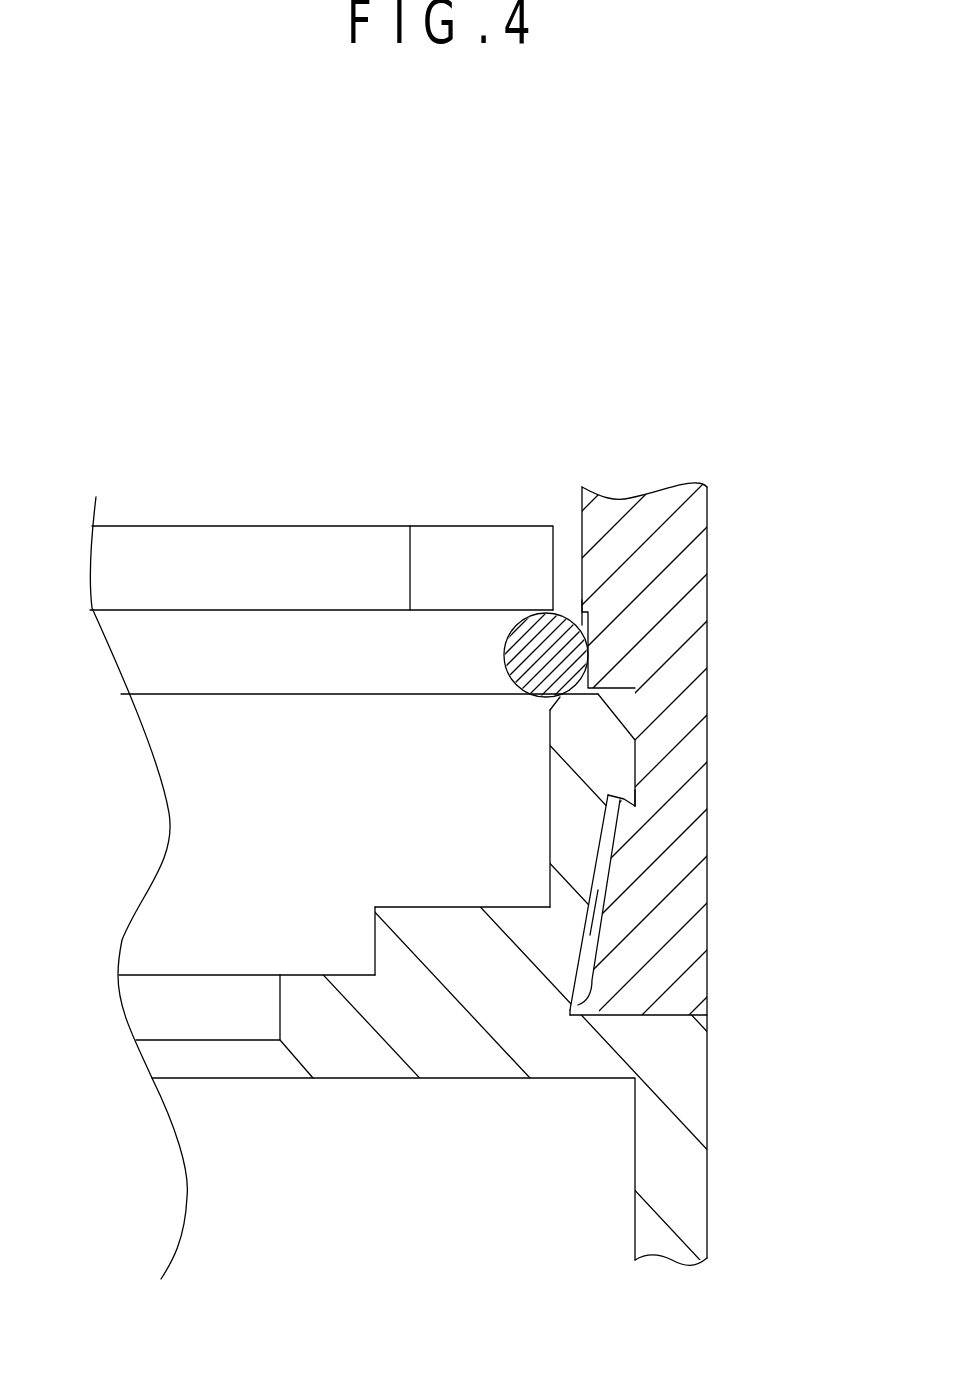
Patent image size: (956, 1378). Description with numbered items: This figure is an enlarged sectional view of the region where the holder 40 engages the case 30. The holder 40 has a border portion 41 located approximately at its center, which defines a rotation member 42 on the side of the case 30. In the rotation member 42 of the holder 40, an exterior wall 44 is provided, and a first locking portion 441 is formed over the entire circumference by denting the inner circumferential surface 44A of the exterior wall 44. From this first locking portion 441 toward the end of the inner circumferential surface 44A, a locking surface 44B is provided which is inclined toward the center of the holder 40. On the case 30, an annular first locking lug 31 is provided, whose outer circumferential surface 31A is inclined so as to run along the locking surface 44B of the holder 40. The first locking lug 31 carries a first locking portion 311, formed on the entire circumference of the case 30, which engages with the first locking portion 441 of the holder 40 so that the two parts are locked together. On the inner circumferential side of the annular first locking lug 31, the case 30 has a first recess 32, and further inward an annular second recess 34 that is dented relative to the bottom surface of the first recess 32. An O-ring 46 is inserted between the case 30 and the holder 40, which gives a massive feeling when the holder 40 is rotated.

The case 30 is at (705, 1152).
The first locking lug 31 is at (605, 830).
The outer circumferential surface 31A is at (578, 917).
The first locking portion 311 is at (628, 800).
The first recess 32 is at (452, 906).
The second recess 34 is at (305, 974).
The holder 40 is at (705, 490).
The border portion 41 is at (332, 526).
The rotation member 42 is at (178, 897).
The exterior wall 44 is at (695, 612).
The inner circumferential surface 44A is at (600, 553).
The locking surface 44B is at (572, 1010).
The first locking portion 441 is at (637, 806).
The O-ring 46 is at (552, 655).